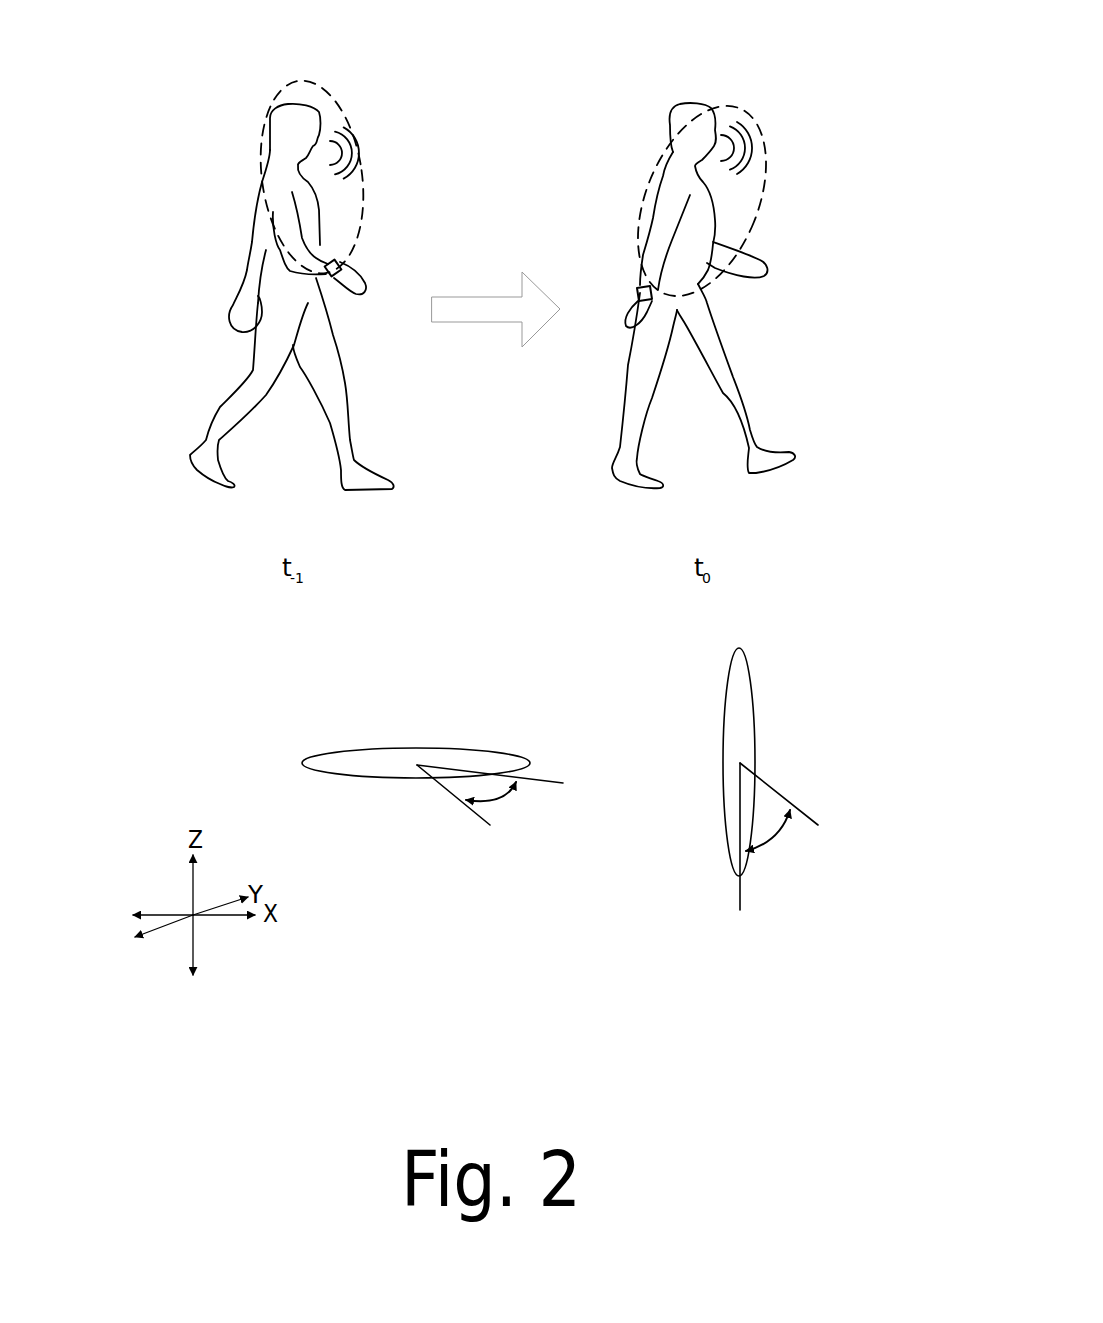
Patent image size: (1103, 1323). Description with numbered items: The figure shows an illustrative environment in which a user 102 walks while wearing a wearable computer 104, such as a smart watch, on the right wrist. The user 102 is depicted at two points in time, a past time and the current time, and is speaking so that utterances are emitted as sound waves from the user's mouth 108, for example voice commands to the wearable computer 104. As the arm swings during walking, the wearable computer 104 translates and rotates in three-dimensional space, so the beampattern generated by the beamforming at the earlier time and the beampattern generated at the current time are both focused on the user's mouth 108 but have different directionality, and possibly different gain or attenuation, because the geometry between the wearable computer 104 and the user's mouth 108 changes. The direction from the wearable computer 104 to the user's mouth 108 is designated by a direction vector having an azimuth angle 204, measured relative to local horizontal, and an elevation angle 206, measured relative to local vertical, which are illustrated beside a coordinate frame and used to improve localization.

The user 102 is at (758, 534).
The wearable computer 104 is at (338, 258).
The user's mouth 108 is at (319, 140).
The azimuth angle 204 is at (485, 814).
The elevation angle 206 is at (804, 790).